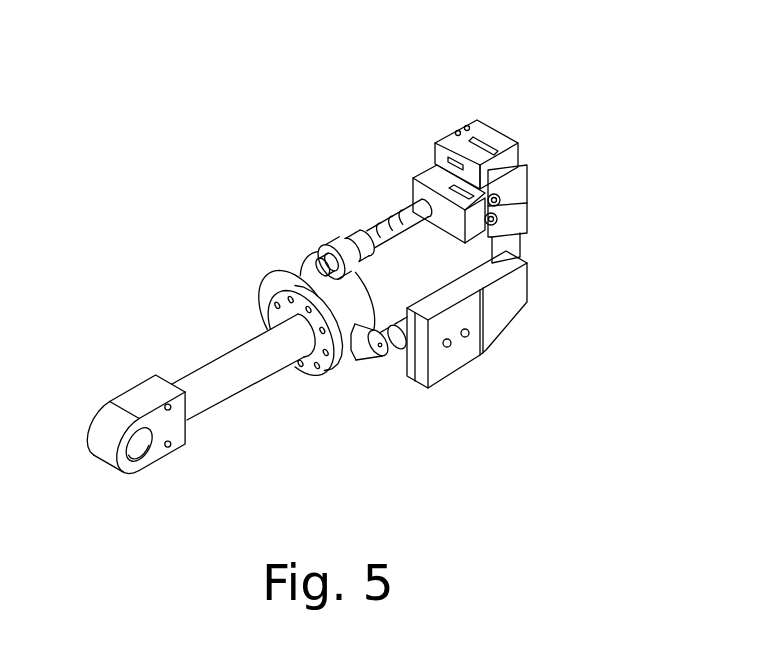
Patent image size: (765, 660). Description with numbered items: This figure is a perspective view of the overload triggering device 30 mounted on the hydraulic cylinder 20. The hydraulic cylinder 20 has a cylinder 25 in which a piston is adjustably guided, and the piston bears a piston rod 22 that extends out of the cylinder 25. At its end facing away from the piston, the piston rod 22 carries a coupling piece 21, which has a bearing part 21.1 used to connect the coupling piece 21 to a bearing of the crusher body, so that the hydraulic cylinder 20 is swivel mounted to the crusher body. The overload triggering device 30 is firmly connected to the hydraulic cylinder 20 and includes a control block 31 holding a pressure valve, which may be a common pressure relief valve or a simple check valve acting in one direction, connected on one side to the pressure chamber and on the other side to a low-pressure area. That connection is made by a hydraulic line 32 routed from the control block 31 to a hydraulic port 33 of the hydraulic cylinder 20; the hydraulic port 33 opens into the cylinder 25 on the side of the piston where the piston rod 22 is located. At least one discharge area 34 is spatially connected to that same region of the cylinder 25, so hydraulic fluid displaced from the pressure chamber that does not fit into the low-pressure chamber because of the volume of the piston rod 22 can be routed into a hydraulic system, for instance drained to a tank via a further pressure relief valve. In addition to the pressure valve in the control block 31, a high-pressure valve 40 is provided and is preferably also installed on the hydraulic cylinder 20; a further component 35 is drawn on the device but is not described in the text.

The hydraulic cylinder 20 is at (298, 378).
The coupling piece 21 is at (136, 431).
The bearing part 21.1 is at (140, 454).
The piston rod 22 is at (212, 370).
The cylinder 25 is at (440, 270).
The overload triggering device 30 is at (487, 148).
The control block 31 is at (518, 186).
The hydraulic line 32 is at (373, 225).
The hydraulic port 33 is at (322, 258).
The discharge area 34 is at (405, 185).
The cover box 35 is at (485, 135).
The high-pressure valve 40 is at (461, 383).